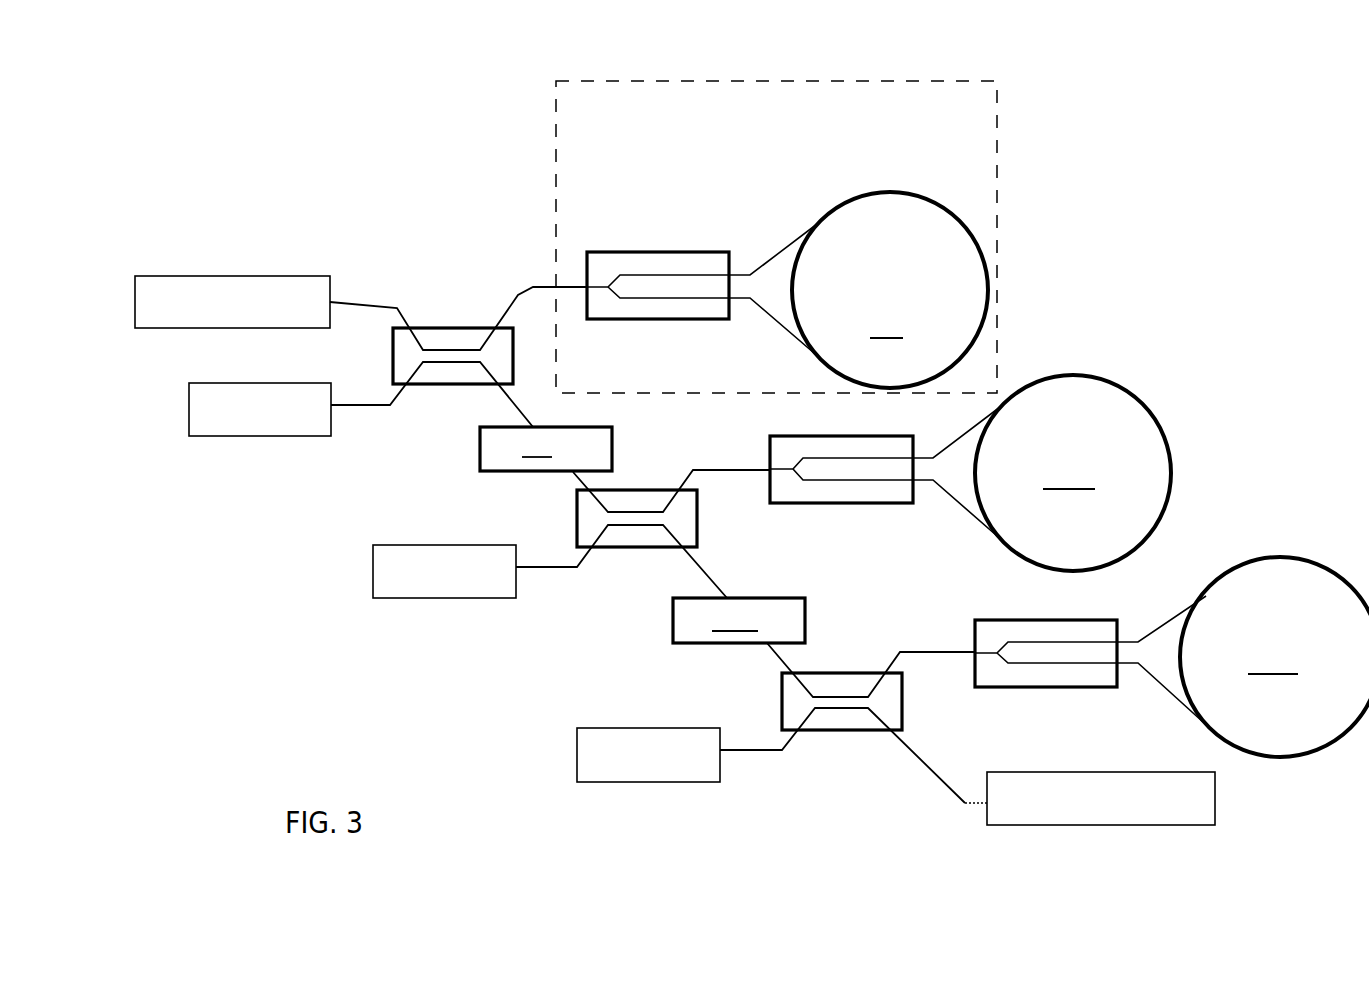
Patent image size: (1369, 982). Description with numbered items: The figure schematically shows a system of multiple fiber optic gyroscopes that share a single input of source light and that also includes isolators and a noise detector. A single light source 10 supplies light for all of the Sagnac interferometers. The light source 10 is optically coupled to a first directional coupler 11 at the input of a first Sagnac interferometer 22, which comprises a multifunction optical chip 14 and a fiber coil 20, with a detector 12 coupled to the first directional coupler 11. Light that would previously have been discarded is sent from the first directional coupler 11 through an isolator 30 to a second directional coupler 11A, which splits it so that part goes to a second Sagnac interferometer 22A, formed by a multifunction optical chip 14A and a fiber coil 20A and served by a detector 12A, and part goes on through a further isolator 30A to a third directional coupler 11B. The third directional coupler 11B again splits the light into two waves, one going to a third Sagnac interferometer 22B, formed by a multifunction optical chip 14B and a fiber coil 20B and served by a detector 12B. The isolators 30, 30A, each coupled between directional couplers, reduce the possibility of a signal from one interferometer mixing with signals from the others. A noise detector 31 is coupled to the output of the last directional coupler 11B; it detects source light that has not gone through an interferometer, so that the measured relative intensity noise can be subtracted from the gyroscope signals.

The light source 10 is at (212, 278).
The first directional coupler 11 is at (430, 375).
The second directional coupler 11A is at (637, 535).
The third directional coupler 11B is at (860, 718).
The detector 12 is at (208, 437).
The detector 12A is at (483, 599).
The detector 12B is at (622, 737).
The multifunction optical chip 14 is at (690, 312).
The multifunction optical chip 14A is at (872, 503).
The multifunction optical chip 14B is at (1058, 687).
The fiber coil 20 is at (890, 290).
The fiber coil 20A is at (1073, 473).
The fiber coil 20B is at (1234, 550).
The first Sagnac interferometer 22 is at (988, 145).
The second Sagnac interferometer 22A is at (1001, 442).
The third Sagnac interferometer 22B is at (1172, 630).
The isolator 30 is at (493, 473).
The isolator 30A is at (739, 620).
The noise detector 31 is at (1208, 785).